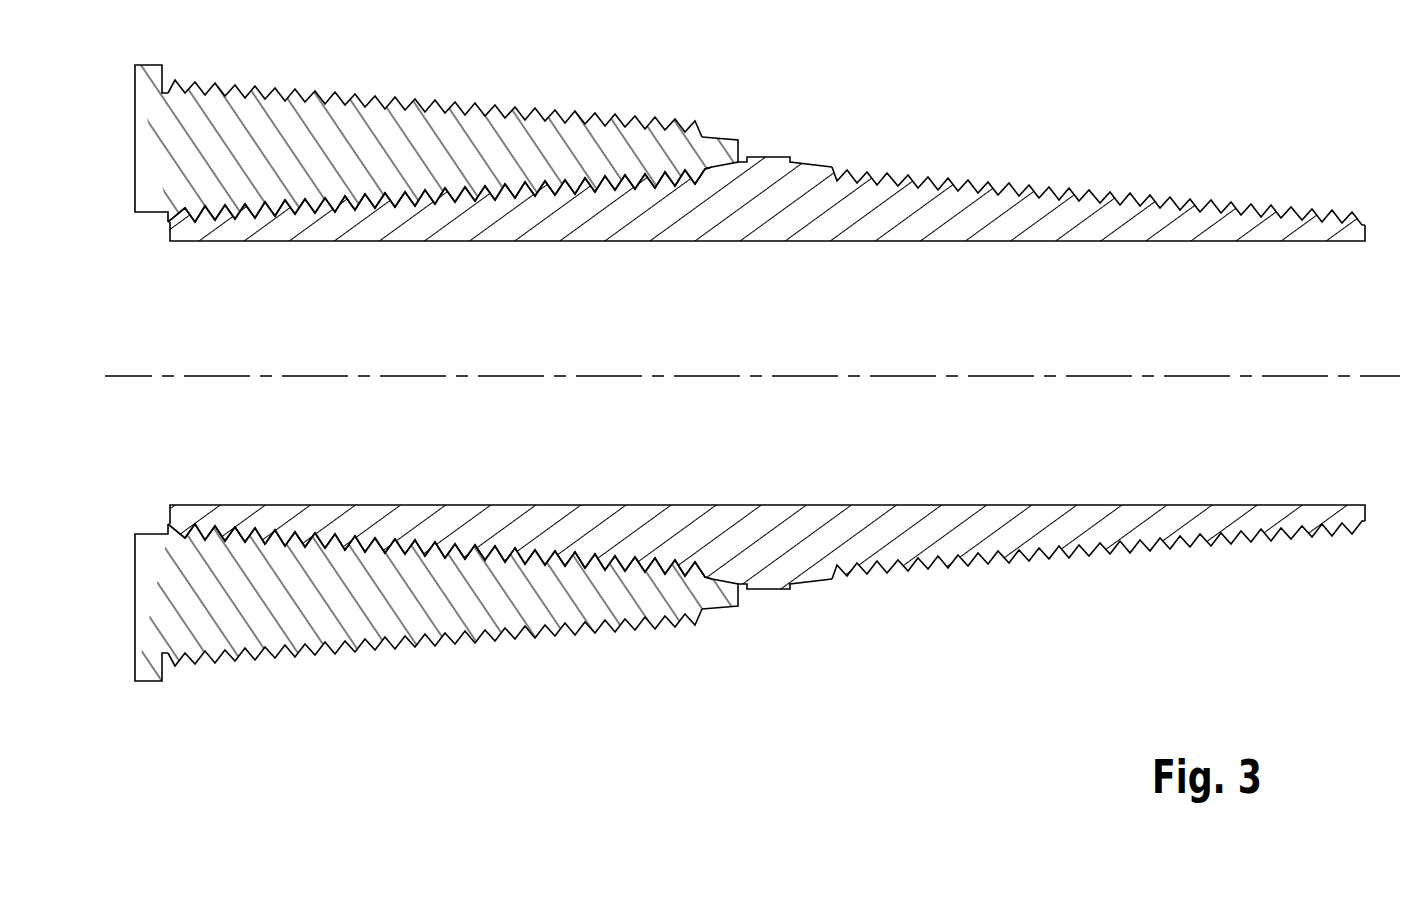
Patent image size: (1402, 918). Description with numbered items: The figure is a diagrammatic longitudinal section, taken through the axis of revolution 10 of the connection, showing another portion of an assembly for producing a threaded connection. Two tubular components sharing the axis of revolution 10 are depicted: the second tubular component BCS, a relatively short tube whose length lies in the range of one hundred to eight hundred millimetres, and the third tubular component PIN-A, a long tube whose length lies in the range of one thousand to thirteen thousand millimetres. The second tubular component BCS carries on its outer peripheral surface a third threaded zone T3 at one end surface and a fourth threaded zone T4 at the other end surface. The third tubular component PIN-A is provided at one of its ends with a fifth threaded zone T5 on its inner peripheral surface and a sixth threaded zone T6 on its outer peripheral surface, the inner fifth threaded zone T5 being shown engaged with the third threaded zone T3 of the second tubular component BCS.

The third tubular component PIN-A is at (262, 141).
The second tubular component BCS is at (968, 225).
The sixth threaded zone T6 is at (332, 108).
The fifth threaded zone T5 is at (437, 190).
The third threaded zone T3 is at (509, 200).
The fourth threaded zone T4 is at (1093, 198).
The axis of revolution 10 is at (1365, 376).